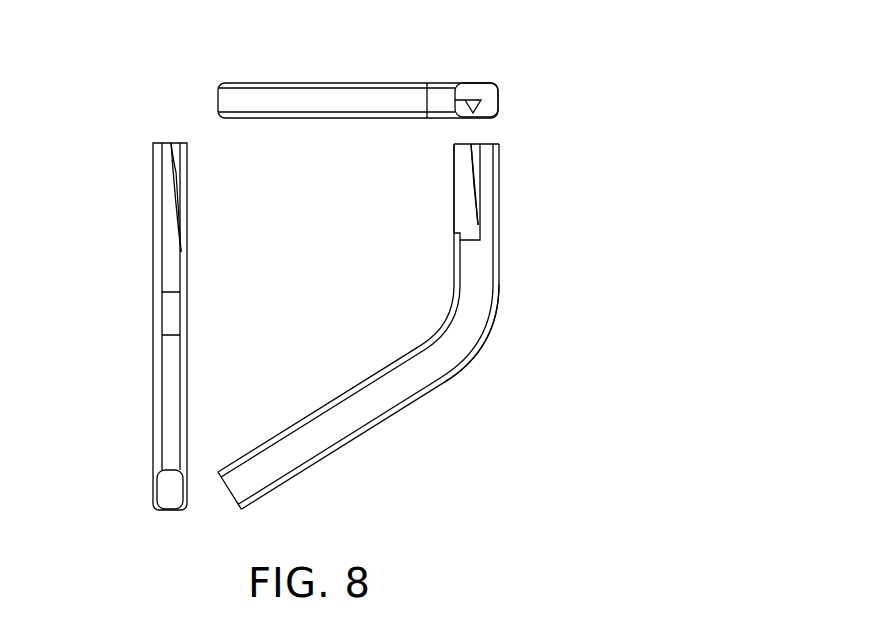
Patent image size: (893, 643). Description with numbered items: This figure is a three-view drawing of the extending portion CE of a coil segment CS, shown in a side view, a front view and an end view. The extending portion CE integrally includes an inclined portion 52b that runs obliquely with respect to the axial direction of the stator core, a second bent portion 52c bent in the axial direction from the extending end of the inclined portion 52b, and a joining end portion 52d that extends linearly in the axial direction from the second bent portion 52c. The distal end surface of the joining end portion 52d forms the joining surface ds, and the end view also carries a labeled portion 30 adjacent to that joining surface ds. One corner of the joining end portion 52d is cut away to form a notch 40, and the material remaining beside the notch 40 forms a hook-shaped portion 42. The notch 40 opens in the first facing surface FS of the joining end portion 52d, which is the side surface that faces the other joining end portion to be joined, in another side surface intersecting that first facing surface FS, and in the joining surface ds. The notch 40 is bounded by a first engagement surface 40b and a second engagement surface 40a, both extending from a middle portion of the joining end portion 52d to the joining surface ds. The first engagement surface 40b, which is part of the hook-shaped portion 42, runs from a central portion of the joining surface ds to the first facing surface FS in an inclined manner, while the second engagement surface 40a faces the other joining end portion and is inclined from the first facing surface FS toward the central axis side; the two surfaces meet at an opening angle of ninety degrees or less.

The flexible substrate 30 is at (458, 118).
The notch 40 is at (198, 192).
The second engagement surface 40a is at (468, 97).
The first engagement surface 40b is at (476, 112).
The hook-shaped portion 42 is at (484, 98).
The inclined portion 52b is at (492, 318).
The second bent portion 52c is at (170, 305).
The joining end portion 52d is at (162, 230).
The extending portion CE is at (312, 103).
The coil segment CS is at (115, 410).
The first facing surface FS is at (188, 262).
The joining surface ds is at (486, 88).